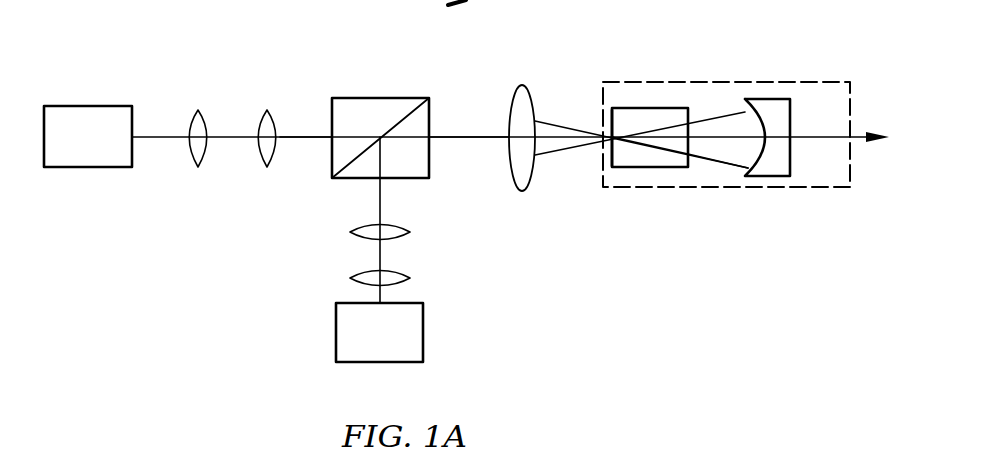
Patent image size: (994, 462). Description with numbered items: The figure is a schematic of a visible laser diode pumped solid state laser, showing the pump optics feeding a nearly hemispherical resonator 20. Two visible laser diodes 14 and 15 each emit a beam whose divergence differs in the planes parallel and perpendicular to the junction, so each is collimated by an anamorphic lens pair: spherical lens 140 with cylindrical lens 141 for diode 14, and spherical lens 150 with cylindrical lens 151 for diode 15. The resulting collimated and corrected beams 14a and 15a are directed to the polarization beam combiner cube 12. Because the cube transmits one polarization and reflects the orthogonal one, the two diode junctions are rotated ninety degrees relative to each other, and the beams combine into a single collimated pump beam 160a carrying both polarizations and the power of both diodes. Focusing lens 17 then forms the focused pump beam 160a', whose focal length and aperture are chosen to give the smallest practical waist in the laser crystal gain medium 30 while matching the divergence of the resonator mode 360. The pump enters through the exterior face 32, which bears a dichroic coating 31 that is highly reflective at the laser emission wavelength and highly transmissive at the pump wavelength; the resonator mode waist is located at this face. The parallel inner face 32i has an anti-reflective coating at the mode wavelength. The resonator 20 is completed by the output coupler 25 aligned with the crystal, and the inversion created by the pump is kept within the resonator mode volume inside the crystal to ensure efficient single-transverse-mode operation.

The visible laser diode 14 is at (88, 167).
The spherical lens 140 is at (196, 108).
The cylindrical lens 141 is at (266, 108).
The collimated and corrected beam 14a is at (300, 138).
The polarization beam combiner cube 12 is at (380, 98).
The collimated and corrected beam 15a is at (380, 192).
The cylindrical lens 151 is at (410, 232).
The spherical lens 150 is at (410, 278).
The visible laser diode 15 is at (336, 336).
The collimated pump beam 160a is at (469, 104).
The focused pump beam 160a' is at (617, 101).
The focusing lens 17 is at (512, 175).
The exterior face 32 is at (607, 135).
The dichroic coating 31 is at (606, 142).
The laser crystal gain medium 30 is at (638, 108).
The inner face 32i is at (678, 151).
The resonator mode 360 is at (724, 163).
The output coupler 25 is at (792, 112).
The resonator 20 is at (782, 82).